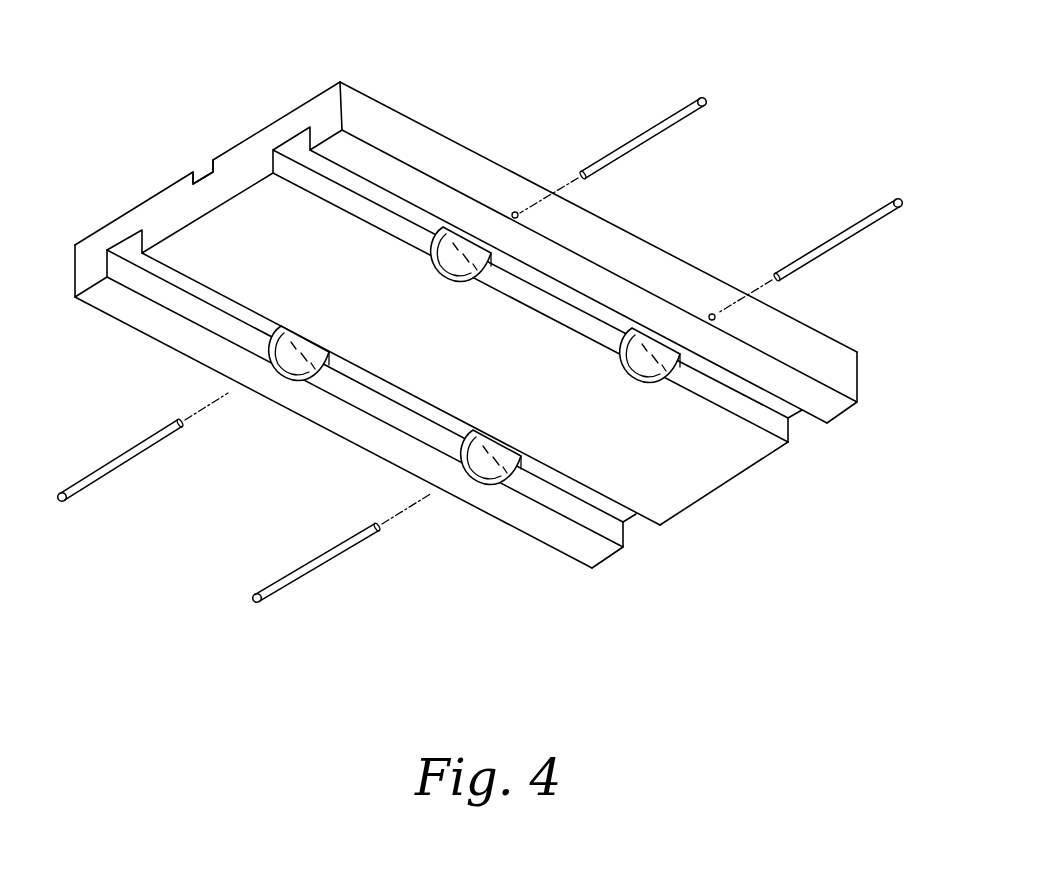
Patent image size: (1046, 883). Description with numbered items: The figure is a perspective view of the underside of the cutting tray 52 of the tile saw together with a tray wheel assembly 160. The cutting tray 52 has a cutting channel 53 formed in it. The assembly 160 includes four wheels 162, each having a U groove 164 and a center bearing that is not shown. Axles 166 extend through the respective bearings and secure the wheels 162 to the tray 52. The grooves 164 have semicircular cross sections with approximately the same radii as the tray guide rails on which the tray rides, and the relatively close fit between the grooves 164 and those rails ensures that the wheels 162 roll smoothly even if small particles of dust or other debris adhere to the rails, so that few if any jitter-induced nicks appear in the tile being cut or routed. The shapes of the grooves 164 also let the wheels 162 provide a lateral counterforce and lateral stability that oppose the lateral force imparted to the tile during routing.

The cutting tray 52 is at (356, 102).
The cutting channel 53 is at (205, 178).
The tray wheel assembly 160 is at (466, 340).
The wheels 162 is at (425, 272).
The U grooves 164 is at (447, 227).
The axles 166 is at (648, 130).